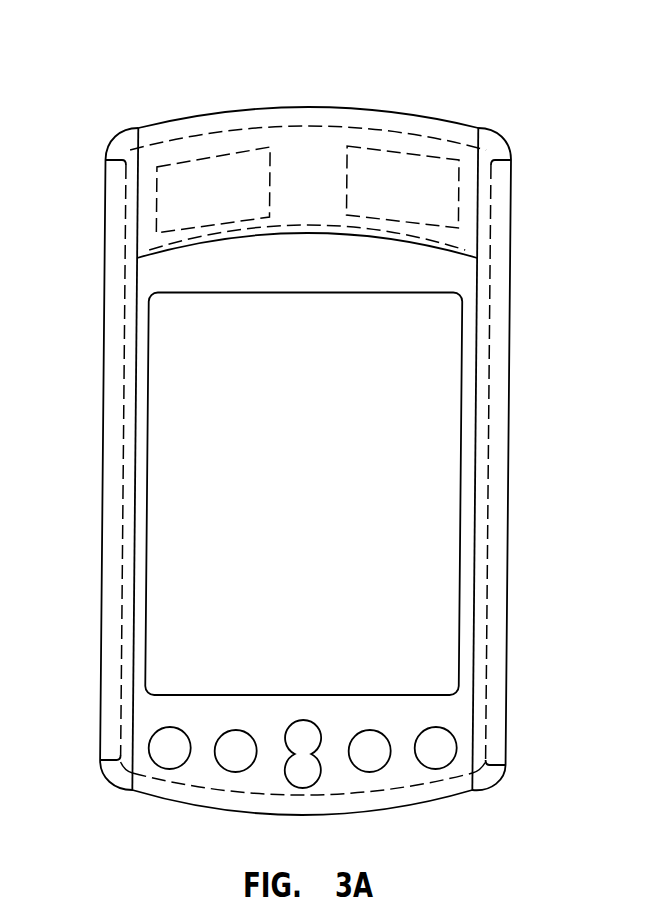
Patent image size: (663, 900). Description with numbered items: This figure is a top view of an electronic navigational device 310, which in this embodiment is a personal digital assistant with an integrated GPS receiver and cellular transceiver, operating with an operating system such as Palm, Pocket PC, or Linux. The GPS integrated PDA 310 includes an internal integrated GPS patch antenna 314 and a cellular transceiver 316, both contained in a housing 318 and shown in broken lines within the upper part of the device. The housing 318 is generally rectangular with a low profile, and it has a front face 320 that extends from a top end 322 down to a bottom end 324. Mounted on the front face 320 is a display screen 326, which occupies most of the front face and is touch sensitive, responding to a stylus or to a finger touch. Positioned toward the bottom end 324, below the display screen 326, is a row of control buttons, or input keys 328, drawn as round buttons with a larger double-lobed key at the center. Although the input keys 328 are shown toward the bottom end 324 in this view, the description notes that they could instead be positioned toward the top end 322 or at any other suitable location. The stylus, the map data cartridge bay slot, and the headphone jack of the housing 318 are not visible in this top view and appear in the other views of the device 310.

The electronic navigational device 310 is at (508, 82).
The internal integrated GPS patch antenna 314 is at (213, 165).
The cellular transceiver 316 is at (398, 170).
The housing 318 is at (105, 257).
The front face 320 is at (152, 283).
The top end 322 is at (327, 106).
The bottom end 324 is at (396, 809).
The display screen 326 is at (417, 513).
The input keys 328 is at (165, 770).